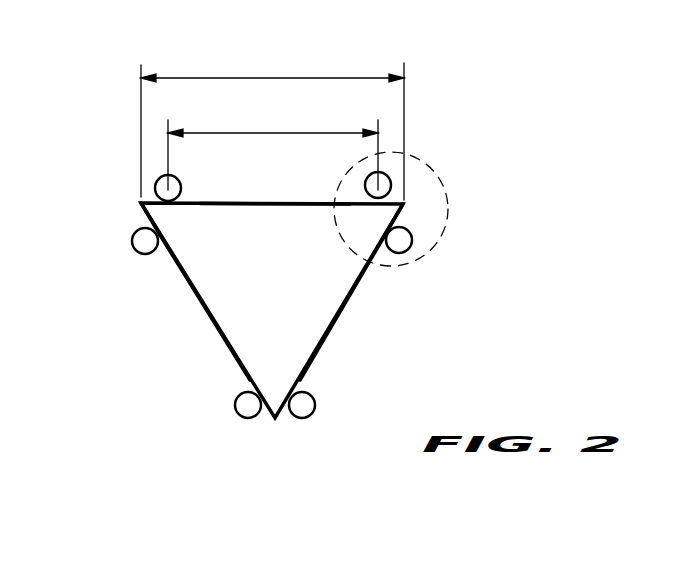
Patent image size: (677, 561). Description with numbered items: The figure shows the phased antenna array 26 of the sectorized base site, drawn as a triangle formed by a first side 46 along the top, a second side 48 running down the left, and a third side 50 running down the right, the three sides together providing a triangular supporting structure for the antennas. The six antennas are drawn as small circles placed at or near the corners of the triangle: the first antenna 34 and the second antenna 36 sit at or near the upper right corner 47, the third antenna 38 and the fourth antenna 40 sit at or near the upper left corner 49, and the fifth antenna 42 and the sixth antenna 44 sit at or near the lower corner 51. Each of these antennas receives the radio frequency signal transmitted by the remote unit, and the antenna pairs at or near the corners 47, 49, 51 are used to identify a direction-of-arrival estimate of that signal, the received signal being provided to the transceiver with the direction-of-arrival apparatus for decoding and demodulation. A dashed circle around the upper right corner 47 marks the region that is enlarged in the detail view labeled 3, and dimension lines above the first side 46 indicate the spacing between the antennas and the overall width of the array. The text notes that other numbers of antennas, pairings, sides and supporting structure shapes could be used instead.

The phased antenna array 26 is at (292, 272).
The first side 46 is at (292, 202).
The second side 48 is at (205, 305).
The third side 50 is at (350, 305).
The corner 49 is at (141, 203).
The corner 47 is at (403, 204).
The corner 51 is at (275, 420).
The third antenna 38 is at (160, 177).
The second antenna 36 is at (391, 183).
The fourth antenna 40 is at (140, 250).
The first antenna 34 is at (410, 250).
The fifth antenna 42 is at (238, 395).
The sixth antenna 44 is at (308, 412).
The detail region of FIG. 3 is at (418, 156).